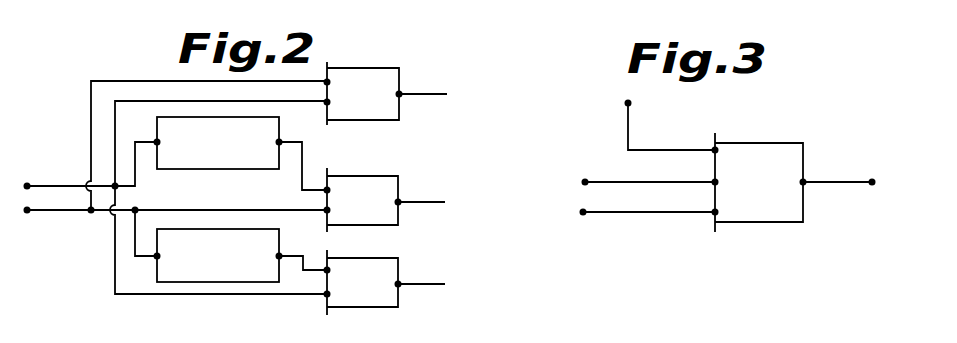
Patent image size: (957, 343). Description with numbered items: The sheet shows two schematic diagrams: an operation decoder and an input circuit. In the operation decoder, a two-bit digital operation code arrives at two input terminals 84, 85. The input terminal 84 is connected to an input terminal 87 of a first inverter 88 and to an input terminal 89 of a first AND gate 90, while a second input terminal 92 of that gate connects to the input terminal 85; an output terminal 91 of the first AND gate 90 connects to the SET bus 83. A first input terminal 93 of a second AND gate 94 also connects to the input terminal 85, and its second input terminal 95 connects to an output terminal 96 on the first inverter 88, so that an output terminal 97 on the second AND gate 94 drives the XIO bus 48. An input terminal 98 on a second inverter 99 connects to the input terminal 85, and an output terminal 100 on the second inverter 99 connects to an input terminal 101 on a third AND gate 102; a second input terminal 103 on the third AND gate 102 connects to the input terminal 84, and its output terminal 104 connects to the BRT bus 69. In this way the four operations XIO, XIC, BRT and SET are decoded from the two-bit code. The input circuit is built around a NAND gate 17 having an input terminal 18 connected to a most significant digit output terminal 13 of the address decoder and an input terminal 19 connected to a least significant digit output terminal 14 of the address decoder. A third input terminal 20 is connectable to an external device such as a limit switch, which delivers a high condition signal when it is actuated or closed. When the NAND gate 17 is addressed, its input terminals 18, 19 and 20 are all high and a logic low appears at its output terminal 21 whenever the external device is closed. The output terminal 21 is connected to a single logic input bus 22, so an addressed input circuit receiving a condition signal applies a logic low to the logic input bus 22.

In FIG. 2, the input terminal 84 is at (28, 183).
In FIG. 2, the input terminal 85 is at (32, 215).
In FIG. 2, the input terminal 87 is at (157, 142).
In FIG. 2, the first inverter 88 is at (235, 169).
In FIG. 2, the input terminal 89 is at (327, 103).
In FIG. 2, the first AND gate 90 is at (380, 68).
In FIG. 2, the output terminal 91 is at (402, 96).
In FIG. 2, the second input terminal 92 is at (327, 82).
In FIG. 2, the SET bus 83 is at (428, 92).
In FIG. 2, the first input terminal 93 is at (326, 211).
In FIG. 2, the second AND gate 94 is at (363, 176).
In FIG. 2, the second input terminal 95 is at (322, 191).
In FIG. 2, the output terminal 96 is at (282, 142).
In FIG. 2, the output terminal 97 is at (400, 201).
In FIG. 2, the XIO bus 48 is at (430, 206).
In FIG. 2, the input terminal 98 is at (156, 257).
In FIG. 2, the second inverter 99 is at (235, 283).
In FIG. 2, the output terminal 100 is at (280, 255).
In FIG. 2, the input terminal 101 is at (323, 271).
In FIG. 2, the third AND gate 102 is at (398, 267).
In FIG. 2, the second input terminal 103 is at (326, 300).
In FIG. 2, the output terminal 104 is at (399, 288).
In FIG. 2, the BRT bus 69 is at (432, 288).
In FIG. 3, the most significant digit output terminal 13 is at (585, 182).
In FIG. 3, the least significant digit output terminal 14 is at (583, 212).
In FIG. 3, the NAND gate 17 is at (778, 222).
In FIG. 3, the input terminal 18 is at (715, 182).
In FIG. 3, the input terminal 19 is at (715, 213).
In FIG. 3, the input terminal 20 is at (715, 148).
In FIG. 3, the output terminal 21 is at (803, 182).
In FIG. 3, the logic input bus 22 is at (873, 190).